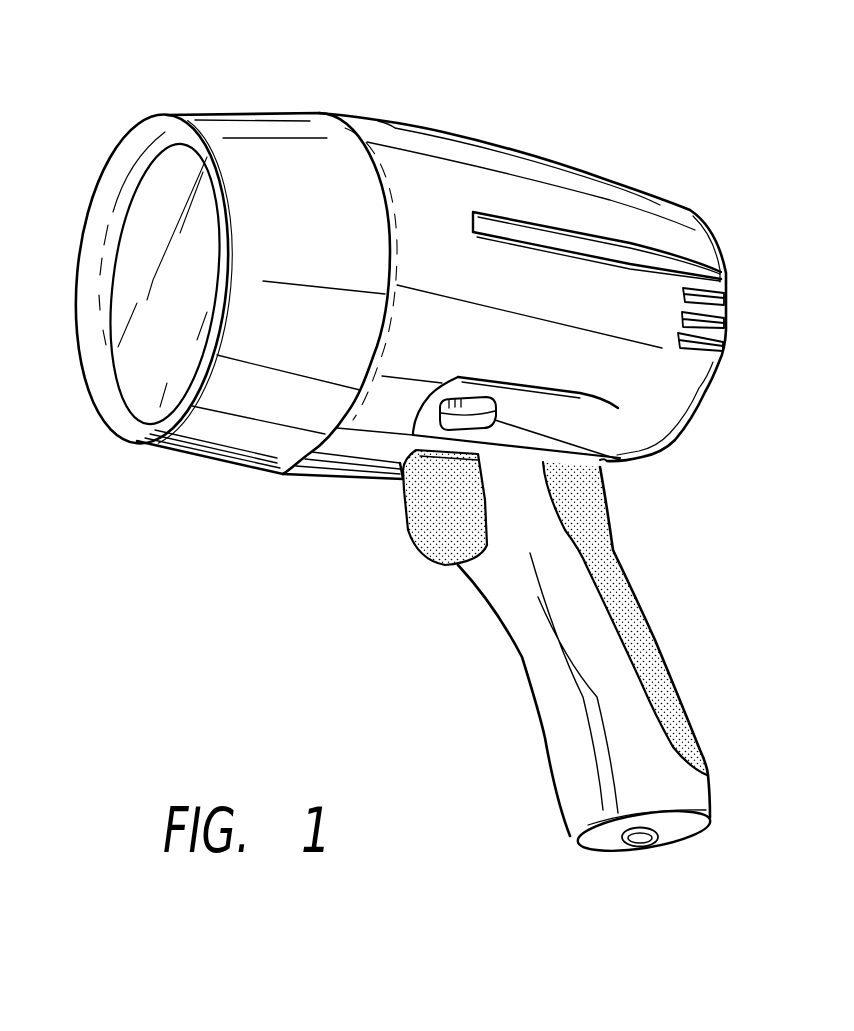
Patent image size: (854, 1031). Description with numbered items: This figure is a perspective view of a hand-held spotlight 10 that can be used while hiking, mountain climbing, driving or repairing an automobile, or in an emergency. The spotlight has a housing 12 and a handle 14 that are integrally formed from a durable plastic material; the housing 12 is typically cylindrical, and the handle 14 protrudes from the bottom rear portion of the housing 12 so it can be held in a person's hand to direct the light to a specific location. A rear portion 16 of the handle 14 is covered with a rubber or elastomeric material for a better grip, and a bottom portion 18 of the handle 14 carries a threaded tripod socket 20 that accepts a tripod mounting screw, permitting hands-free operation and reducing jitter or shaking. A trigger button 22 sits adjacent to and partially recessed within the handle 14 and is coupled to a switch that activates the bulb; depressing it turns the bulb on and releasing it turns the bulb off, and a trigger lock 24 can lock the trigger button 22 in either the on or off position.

The hand-held spotlight 10 is at (82, 78).
The housing 12 is at (443, 131).
The handle 14 is at (522, 657).
The rear portion of the handle 16 is at (660, 640).
The bottom portion of the handle 18 is at (705, 838).
The threaded tripod socket 20 is at (638, 847).
The trigger button 22 is at (416, 500).
The trigger lock 24 is at (607, 461).